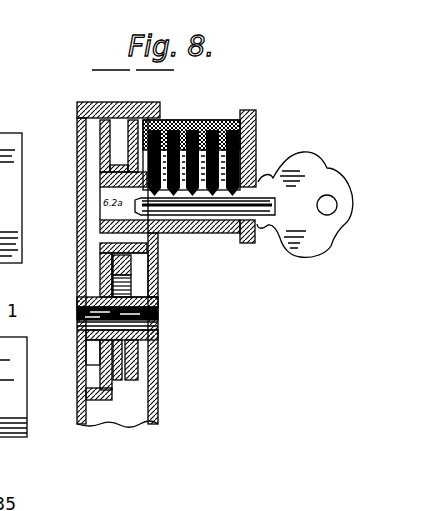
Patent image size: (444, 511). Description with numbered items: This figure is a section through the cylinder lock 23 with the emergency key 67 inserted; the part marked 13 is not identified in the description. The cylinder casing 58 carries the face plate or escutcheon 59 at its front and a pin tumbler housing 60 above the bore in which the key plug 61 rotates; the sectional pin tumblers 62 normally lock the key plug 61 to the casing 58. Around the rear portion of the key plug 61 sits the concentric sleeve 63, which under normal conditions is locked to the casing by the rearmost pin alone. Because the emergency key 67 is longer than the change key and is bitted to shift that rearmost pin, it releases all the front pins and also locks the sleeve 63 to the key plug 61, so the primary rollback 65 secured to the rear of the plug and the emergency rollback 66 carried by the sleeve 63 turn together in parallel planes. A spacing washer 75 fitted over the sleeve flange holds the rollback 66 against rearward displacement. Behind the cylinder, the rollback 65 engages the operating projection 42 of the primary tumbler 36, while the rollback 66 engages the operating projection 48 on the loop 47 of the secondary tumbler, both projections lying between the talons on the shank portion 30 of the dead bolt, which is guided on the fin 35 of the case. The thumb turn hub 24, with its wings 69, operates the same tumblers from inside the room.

The pin chamber 13 is at (160, 114).
The cylinder lock 23 is at (191, 122).
The thumb turn hub 24 is at (160, 335).
The shank portion 30 is at (100, 277).
The fin 35 is at (97, 384).
The primary tumbler 36 is at (115, 400).
The operating projection 42 is at (82, 243).
The loop 47 is at (128, 390).
The operating projection 48 is at (106, 236).
The cylinder casing 58 is at (232, 246).
The face plate or escutcheon 59 is at (257, 117).
The pin tumbler housing 60 is at (222, 120).
The key plug 61 is at (261, 176).
The pin tumblers 62 is at (189, 192).
The sleeve 63 is at (157, 246).
The rollback 65 is at (80, 130).
The rollback 66 is at (137, 163).
The emergency key 67 is at (303, 248).
The wings 69 is at (158, 372).
The spacing washer 75 is at (120, 160).